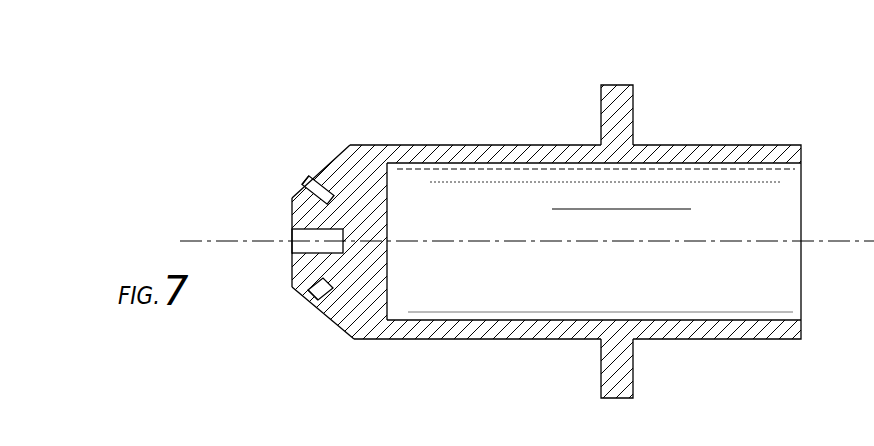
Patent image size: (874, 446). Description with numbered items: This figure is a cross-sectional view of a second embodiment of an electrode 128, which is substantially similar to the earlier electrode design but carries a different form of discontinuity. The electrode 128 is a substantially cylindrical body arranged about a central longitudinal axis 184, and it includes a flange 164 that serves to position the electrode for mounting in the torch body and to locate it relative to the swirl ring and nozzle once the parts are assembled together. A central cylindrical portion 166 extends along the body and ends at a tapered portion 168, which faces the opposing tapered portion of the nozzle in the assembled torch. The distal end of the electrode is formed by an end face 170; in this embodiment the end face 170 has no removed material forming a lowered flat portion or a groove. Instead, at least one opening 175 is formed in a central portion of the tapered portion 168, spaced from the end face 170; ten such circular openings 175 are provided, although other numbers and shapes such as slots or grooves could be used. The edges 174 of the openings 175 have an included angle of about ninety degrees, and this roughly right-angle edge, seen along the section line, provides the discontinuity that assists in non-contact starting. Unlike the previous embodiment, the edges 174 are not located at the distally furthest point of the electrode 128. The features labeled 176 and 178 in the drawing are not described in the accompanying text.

The electrode 128 is at (455, 60).
The flange 164 is at (617, 85).
The central cylindrical portion 166 is at (520, 145).
The tapered portion 168 is at (350, 146).
The end face 170 is at (292, 220).
The edges 174 is at (318, 190).
The openings 175 is at (316, 184).
The lower chamfer 176 is at (291, 270).
The central bore 178 is at (302, 247).
The central longitudinal axis 184 is at (527, 242).